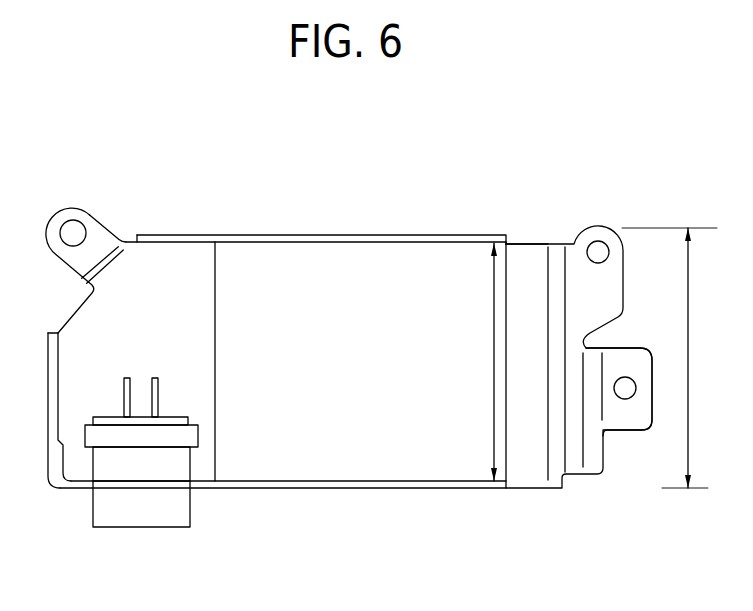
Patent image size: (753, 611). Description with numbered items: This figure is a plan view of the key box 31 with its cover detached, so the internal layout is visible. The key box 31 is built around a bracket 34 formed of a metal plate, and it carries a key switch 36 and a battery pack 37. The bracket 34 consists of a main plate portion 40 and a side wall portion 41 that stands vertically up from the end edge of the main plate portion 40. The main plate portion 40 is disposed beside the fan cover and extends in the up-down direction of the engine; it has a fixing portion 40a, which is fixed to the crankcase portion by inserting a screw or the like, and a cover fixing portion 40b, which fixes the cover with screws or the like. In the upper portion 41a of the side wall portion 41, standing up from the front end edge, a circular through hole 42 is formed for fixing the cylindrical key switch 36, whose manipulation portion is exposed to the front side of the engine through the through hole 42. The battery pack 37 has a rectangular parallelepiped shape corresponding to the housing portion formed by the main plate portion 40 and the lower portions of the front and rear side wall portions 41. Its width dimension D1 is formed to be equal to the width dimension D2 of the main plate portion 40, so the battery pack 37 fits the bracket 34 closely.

The key box 31 is at (507, 170).
The bracket 34 is at (527, 257).
The key switch 36 is at (180, 512).
The battery pack 37 is at (268, 258).
The main plate portion 40 is at (525, 472).
The fixing portion 40a is at (93, 227).
The cover fixing portion 40b is at (623, 415).
The side wall portion 41 is at (368, 235).
The upper portion 41a is at (70, 490).
The through hole 42 is at (108, 482).
The width dimension of the battery pack D1 is at (478, 362).
The width dimension of the main plate portion D2 is at (673, 358).